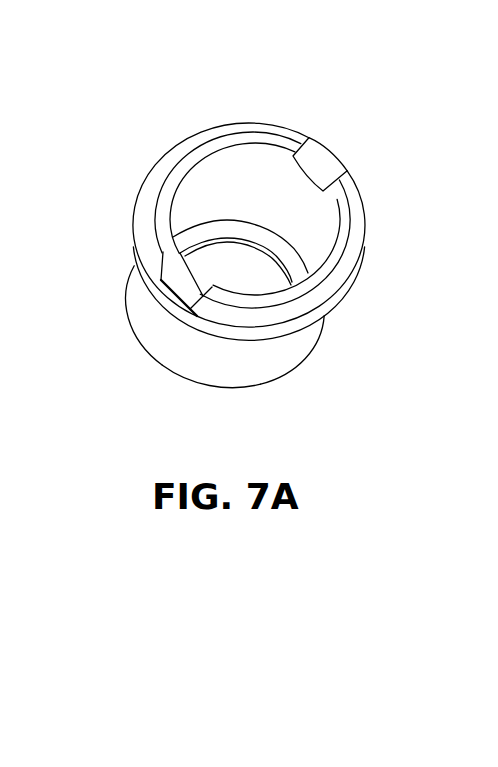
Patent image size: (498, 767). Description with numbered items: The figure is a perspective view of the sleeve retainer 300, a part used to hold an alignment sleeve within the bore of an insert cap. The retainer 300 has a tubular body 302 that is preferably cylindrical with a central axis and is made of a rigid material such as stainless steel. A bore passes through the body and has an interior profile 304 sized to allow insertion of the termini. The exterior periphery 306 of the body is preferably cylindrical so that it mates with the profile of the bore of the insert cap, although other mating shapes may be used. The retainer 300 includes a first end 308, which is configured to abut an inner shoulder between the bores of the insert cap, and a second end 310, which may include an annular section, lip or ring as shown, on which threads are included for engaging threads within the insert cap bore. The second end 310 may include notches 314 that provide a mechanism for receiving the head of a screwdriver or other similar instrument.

The sleeve retainer 300 is at (327, 65).
The tubular body 302 is at (320, 322).
The interior profile 304 is at (253, 175).
The exterior periphery 306 is at (130, 280).
The first end 308 is at (182, 377).
The second end 310 is at (170, 168).
The notches 314 is at (333, 152).